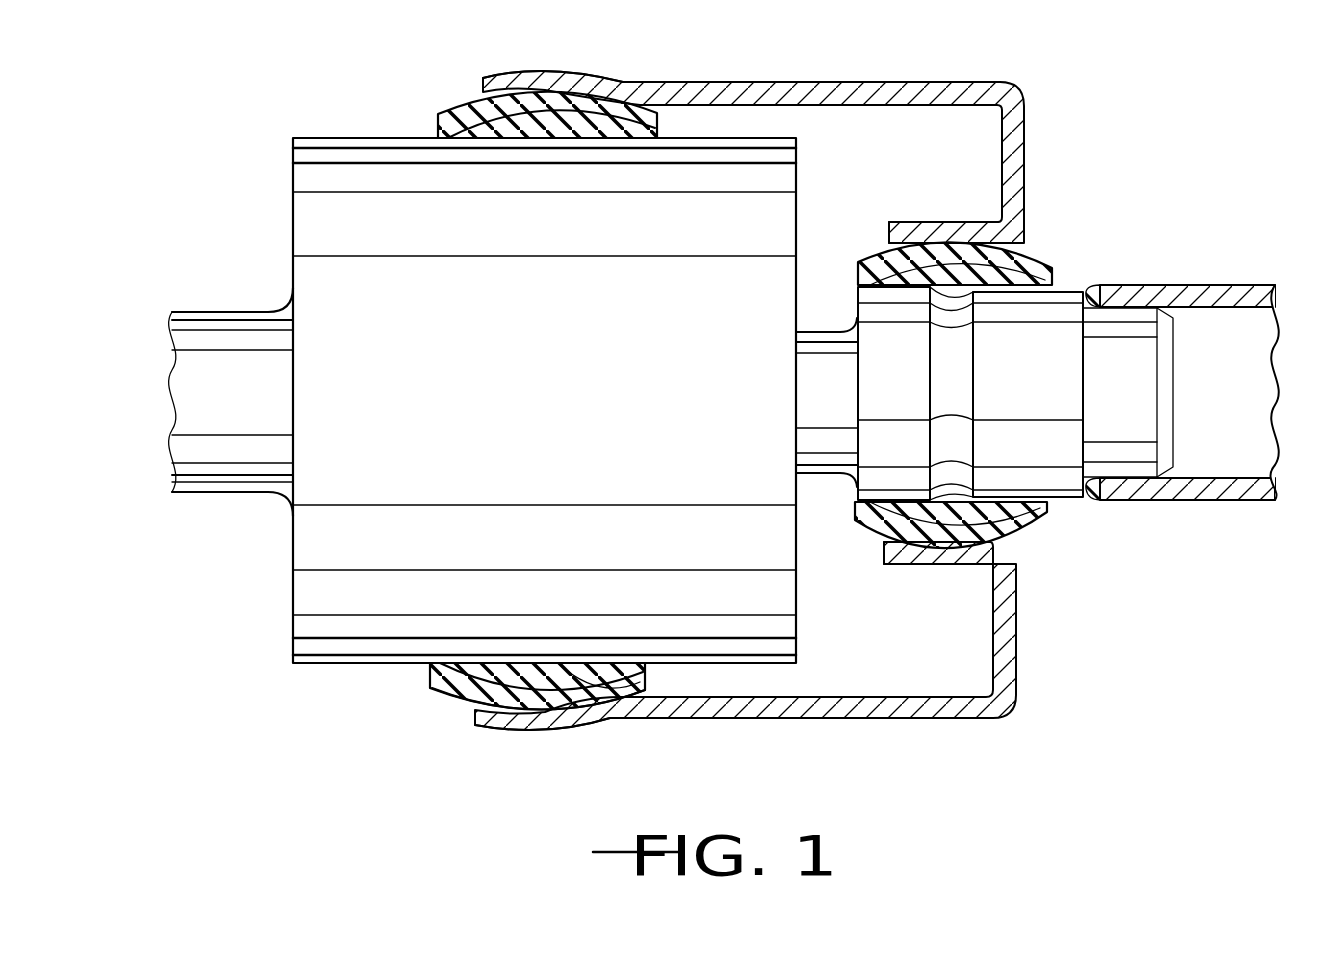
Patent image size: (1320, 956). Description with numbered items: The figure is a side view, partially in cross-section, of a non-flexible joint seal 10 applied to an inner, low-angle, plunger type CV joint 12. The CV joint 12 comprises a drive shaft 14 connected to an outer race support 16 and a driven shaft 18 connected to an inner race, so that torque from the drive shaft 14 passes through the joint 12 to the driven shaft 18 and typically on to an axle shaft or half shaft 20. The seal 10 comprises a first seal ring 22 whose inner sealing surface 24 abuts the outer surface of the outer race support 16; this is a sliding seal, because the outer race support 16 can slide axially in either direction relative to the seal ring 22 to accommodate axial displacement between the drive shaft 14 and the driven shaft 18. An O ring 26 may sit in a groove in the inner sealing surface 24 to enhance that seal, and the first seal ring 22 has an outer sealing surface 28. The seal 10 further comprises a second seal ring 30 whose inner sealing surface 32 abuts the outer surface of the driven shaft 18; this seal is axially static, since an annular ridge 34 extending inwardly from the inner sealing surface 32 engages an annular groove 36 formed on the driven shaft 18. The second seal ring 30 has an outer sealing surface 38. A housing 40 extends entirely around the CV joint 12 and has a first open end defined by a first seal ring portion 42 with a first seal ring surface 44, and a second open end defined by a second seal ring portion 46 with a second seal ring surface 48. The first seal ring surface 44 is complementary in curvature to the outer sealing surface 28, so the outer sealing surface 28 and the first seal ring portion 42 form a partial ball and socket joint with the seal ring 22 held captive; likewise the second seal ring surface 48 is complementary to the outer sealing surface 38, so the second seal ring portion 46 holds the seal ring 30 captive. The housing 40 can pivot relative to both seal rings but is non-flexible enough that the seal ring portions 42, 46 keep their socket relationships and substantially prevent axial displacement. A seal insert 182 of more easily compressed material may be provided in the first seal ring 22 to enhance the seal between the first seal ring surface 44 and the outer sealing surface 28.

The non-flexible joint seal 10 is at (1018, 748).
The CV joint 12 is at (200, 710).
The drive shaft 14 is at (222, 310).
The outer race support 16 is at (345, 137).
The driven shaft 18 is at (822, 473).
The axle shaft or half shaft 20 is at (1212, 285).
The first seal ring 22 is at (434, 700).
The inner sealing surface 24 is at (537, 663).
The O ring 26 is at (443, 663).
The outer sealing surface 28 is at (460, 702).
The second seal ring 30 is at (1015, 360).
The inner sealing surface 32 is at (1017, 295).
The annular ridge 34 is at (945, 300).
The annular groove 36 is at (1014, 522).
The outer sealing surface 38 is at (1020, 248).
The housing 40 is at (722, 78).
The first seal ring portion 42 is at (527, 72).
The first seal ring surface 44 is at (577, 690).
The second seal ring portion 46 is at (924, 222).
The second seal ring surface 48 is at (876, 262).
The seal insert 182 is at (540, 95).